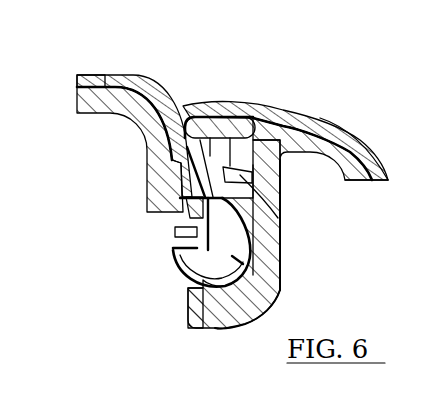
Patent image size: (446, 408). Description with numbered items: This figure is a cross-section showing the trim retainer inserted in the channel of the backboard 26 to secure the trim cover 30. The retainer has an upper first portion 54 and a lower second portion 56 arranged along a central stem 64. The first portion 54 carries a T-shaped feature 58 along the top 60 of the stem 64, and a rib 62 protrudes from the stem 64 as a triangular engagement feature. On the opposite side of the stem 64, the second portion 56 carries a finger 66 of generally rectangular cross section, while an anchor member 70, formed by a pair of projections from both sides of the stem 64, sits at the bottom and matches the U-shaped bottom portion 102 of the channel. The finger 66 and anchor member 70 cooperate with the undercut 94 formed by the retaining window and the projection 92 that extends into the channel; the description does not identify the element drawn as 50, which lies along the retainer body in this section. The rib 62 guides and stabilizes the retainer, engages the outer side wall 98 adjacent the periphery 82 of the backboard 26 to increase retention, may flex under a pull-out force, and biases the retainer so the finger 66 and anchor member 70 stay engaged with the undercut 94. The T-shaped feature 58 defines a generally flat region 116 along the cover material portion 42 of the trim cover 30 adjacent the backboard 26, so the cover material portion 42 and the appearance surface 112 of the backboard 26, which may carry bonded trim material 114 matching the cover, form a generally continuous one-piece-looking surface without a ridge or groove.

The backboard 26 is at (80, 98).
The trim cover 30 is at (345, 135).
The cover material portion 42 is at (378, 176).
The central column 50 is at (278, 233).
The upper first portion 54 is at (200, 157).
The lower second portion 56 is at (208, 250).
The T-shaped feature 58 is at (237, 118).
The top 60 is at (205, 118).
The rib 62 is at (278, 189).
The central stem 64 is at (278, 263).
The finger 66 is at (177, 232).
The anchor member 70 is at (182, 260).
The periphery 82 is at (351, 181).
The projection 92 is at (187, 192).
The undercut 94 is at (167, 213).
The outer side wall 98 is at (274, 294).
The U-shaped bottom portion 102 is at (188, 308).
The appearance surface 112 is at (77, 75).
The trim material 114 is at (133, 83).
The flat region 116 is at (270, 113).